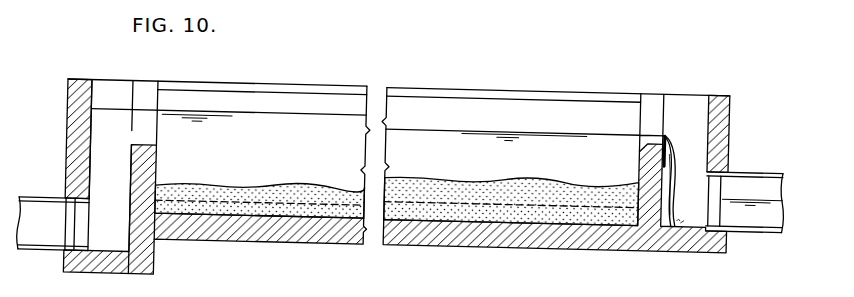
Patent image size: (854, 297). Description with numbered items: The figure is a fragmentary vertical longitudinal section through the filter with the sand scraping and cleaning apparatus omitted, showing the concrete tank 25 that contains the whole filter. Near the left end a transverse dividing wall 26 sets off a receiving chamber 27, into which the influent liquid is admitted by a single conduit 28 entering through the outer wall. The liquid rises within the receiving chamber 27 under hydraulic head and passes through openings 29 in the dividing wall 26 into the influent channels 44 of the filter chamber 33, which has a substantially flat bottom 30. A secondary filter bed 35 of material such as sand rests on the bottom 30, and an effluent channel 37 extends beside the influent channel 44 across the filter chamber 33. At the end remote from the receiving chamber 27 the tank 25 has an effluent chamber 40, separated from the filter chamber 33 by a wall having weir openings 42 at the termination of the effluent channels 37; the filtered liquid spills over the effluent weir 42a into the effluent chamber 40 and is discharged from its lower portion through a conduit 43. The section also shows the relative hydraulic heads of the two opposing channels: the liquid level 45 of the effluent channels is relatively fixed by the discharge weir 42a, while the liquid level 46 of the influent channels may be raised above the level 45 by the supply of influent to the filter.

The tank 25 is at (263, 80).
The transverse dividing wall 26 is at (152, 158).
The receiving chamber 27 is at (117, 153).
The conduit 28 is at (40, 243).
The openings 29 is at (137, 129).
The bottom 30 is at (283, 235).
The filter chamber 33 is at (487, 115).
The filter bed 35 is at (245, 203).
The effluent channel 37 is at (505, 150).
The effluent chamber 40 is at (695, 140).
The weir openings 42 is at (647, 142).
The effluent weir 42a is at (668, 137).
The conduit 43 is at (743, 183).
The influent channel 44 is at (255, 135).
The liquid level 45 is at (423, 130).
The liquid level 46 is at (323, 113).